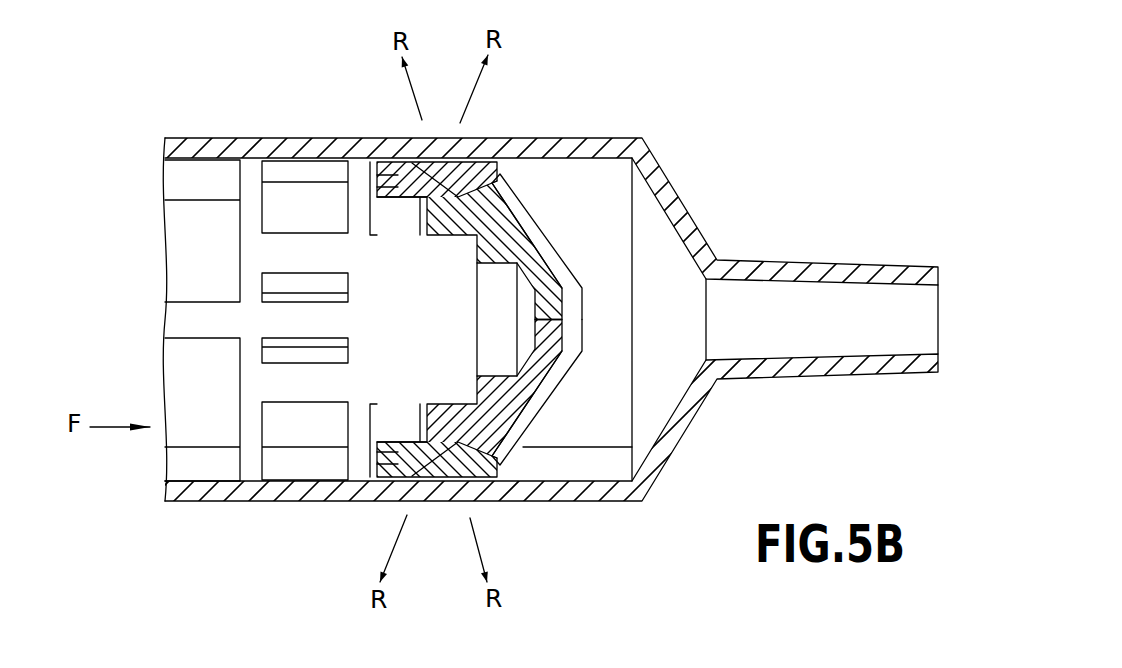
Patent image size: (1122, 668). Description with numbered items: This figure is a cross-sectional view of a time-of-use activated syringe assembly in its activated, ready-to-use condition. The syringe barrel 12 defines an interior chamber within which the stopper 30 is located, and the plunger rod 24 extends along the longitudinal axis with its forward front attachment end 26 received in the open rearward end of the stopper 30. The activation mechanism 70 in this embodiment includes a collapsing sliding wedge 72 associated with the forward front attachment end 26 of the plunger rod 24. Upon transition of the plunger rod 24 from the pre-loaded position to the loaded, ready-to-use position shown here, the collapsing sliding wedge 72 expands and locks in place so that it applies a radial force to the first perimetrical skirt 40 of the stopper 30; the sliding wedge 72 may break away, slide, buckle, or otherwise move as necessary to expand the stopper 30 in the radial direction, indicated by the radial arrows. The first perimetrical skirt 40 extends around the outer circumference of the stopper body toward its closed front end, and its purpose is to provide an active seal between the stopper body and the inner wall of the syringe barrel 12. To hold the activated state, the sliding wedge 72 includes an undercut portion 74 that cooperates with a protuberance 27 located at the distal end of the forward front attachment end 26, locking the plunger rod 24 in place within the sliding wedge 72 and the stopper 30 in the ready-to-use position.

The syringe barrel 12 is at (270, 148).
The plunger rod 24 is at (183, 255).
The forward front attachment end 26 is at (410, 343).
The protuberance 27 is at (458, 168).
The stopper 30 is at (527, 420).
The first perimetrical skirt 40 is at (480, 167).
The activation mechanism 70 is at (458, 540).
The collapsing sliding wedge 72 is at (478, 423).
The undercut portion 74 is at (437, 443).